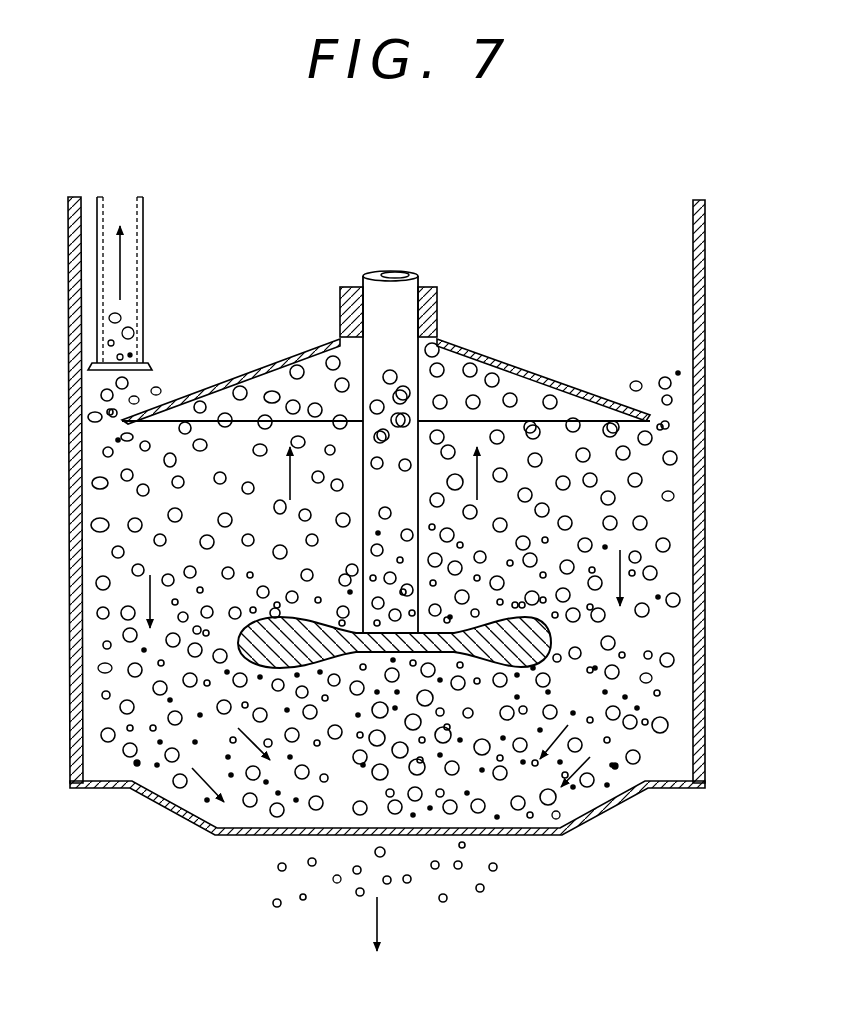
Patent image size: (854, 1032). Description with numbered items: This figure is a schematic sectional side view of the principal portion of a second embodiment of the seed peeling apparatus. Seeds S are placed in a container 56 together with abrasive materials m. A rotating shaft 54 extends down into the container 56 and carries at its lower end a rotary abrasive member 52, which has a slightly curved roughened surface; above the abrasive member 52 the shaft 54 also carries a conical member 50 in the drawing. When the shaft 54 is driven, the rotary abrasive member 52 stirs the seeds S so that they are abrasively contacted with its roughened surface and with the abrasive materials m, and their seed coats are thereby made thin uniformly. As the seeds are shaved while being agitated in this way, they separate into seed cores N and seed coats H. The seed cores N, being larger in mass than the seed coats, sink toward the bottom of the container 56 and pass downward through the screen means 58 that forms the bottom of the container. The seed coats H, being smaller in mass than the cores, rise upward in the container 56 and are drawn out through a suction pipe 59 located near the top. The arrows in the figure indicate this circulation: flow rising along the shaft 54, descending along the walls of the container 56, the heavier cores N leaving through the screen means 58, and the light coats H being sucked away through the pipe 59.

The conical baffle 50 is at (427, 414).
The rotary abrasive member 52 is at (483, 652).
The rotating shaft 54 is at (386, 291).
The container 56 is at (705, 291).
The screen means 58 is at (174, 812).
The suction pipe 59 is at (145, 222).
The seed coats H is at (136, 397).
The seeds S is at (674, 494).
The abrasive materials m is at (137, 766).
The seed cores N is at (337, 883).